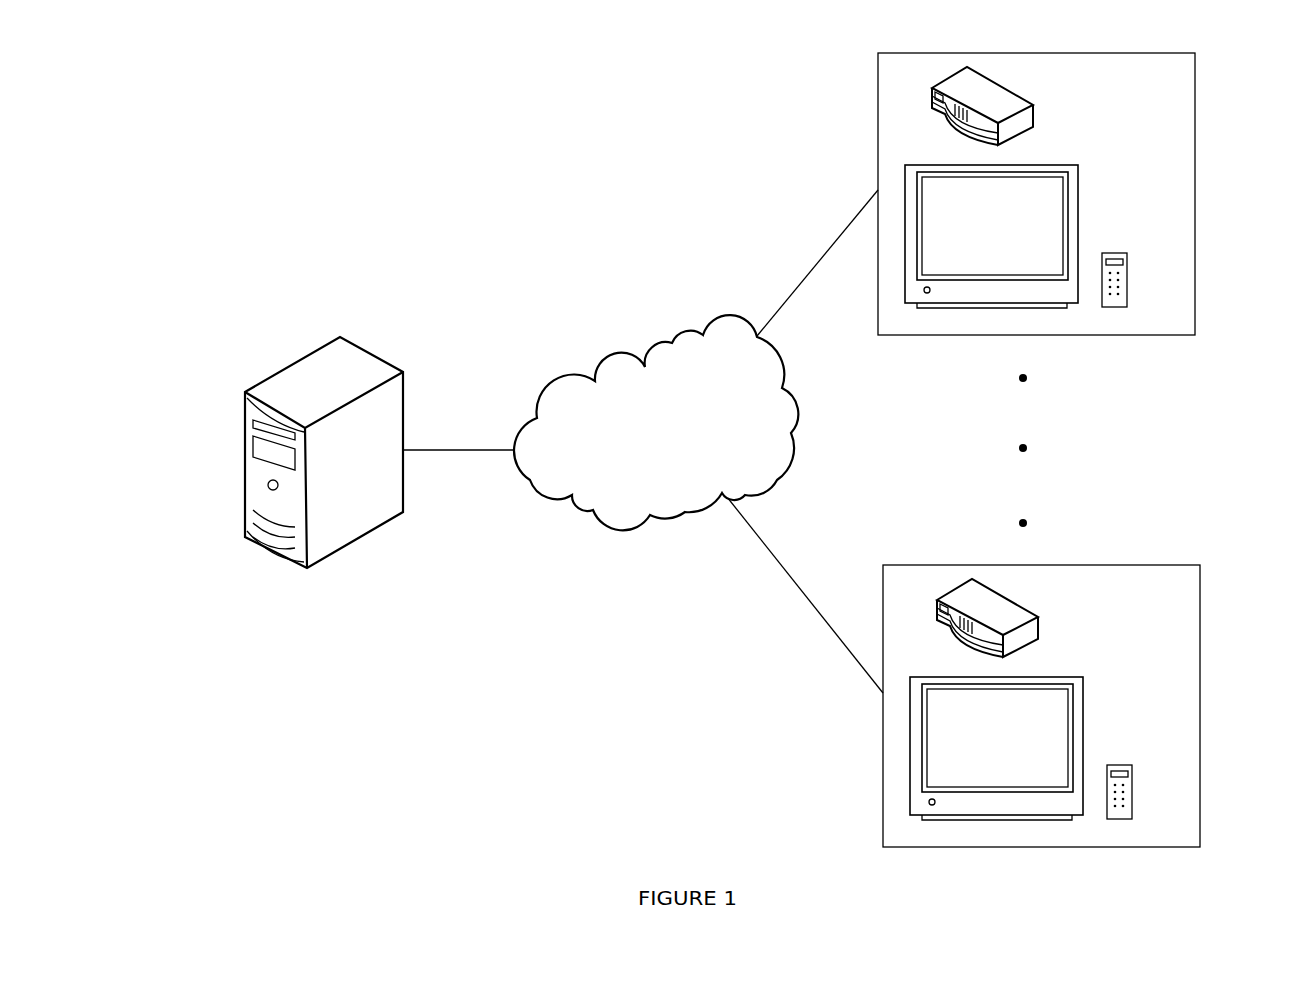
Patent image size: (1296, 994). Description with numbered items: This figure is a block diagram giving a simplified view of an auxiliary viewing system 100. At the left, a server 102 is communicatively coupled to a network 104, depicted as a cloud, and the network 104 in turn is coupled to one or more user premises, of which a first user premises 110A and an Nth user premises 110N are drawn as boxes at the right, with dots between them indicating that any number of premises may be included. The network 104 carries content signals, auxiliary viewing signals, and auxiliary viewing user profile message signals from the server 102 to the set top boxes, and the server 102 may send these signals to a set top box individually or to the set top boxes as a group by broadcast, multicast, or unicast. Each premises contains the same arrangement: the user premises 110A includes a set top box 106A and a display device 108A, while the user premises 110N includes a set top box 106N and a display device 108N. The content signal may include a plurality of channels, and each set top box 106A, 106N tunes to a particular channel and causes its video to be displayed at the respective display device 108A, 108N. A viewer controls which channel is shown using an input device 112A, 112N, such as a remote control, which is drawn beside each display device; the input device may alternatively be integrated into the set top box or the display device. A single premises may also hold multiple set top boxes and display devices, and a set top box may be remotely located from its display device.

The auxiliary viewing system 100 is at (672, 66).
The server 102 is at (413, 387).
The network 104 is at (640, 443).
The set top box 106A is at (1042, 115).
The set top box 106N is at (1019, 618).
The display device 108A is at (1087, 212).
The display device 108N is at (1029, 748).
The user premises 110A is at (1213, 88).
The user premises 110N is at (1077, 701).
The input device 112A is at (1132, 280).
The input device 112N is at (1149, 783).